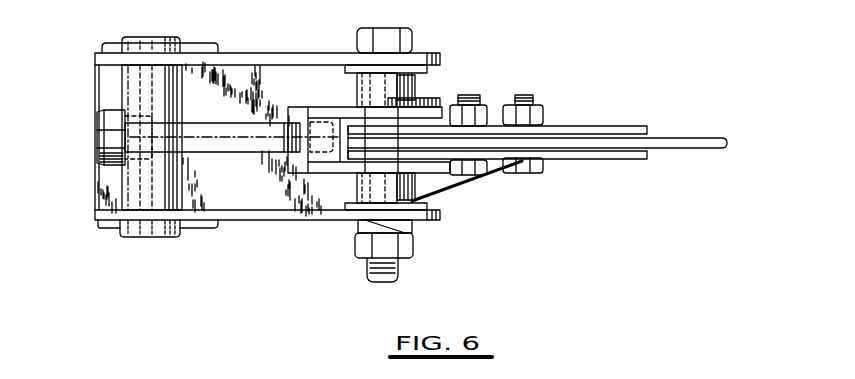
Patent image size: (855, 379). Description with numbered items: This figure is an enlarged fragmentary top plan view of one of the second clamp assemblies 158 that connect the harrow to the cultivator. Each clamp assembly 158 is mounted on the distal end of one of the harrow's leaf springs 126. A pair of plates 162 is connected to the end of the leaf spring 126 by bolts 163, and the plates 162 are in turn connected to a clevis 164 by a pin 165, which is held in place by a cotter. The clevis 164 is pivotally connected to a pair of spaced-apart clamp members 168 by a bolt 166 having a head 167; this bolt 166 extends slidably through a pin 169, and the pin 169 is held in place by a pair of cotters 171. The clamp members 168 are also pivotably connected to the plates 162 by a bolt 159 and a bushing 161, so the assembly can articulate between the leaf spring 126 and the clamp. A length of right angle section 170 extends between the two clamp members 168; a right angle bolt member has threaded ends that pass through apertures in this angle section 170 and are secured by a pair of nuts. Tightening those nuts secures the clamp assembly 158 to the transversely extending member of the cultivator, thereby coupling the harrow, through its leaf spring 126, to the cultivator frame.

The leaf spring 126 is at (680, 138).
The second clamp assembly 158 is at (517, 229).
The bolt 159 is at (386, 283).
The bushing 161 is at (372, 85).
The plates 162 is at (597, 128).
The bolts 163 is at (480, 98).
The clevis 164 is at (442, 113).
The pin 165 is at (433, 193).
The bolt 166 is at (220, 134).
The head 167 is at (100, 141).
The clamp members 168 is at (258, 54).
The pin 169 is at (137, 79).
The right angle section 170 is at (251, 197).
The cotters 171 is at (192, 48).